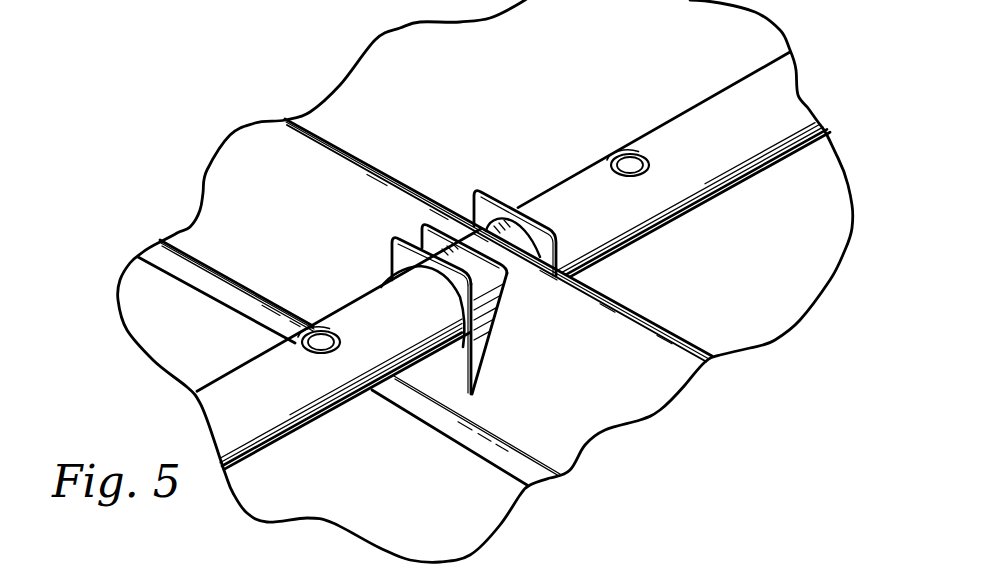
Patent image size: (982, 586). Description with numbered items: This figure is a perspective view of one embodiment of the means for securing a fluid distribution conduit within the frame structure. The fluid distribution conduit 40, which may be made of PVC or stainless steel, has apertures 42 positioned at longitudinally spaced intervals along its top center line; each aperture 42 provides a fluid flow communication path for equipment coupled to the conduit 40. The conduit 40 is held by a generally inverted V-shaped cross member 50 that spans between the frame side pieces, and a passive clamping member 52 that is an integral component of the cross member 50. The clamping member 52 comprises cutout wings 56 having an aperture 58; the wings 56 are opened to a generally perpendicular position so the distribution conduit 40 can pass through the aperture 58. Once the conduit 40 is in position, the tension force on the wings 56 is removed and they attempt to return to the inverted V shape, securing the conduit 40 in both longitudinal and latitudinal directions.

The fluid distribution conduit 40 is at (707, 113).
The aperture 42 is at (632, 163).
The cross member 50 is at (627, 327).
The passive clamping member 52 is at (452, 373).
The cutout wings 56 is at (409, 256).
The aperture 58 is at (390, 283).